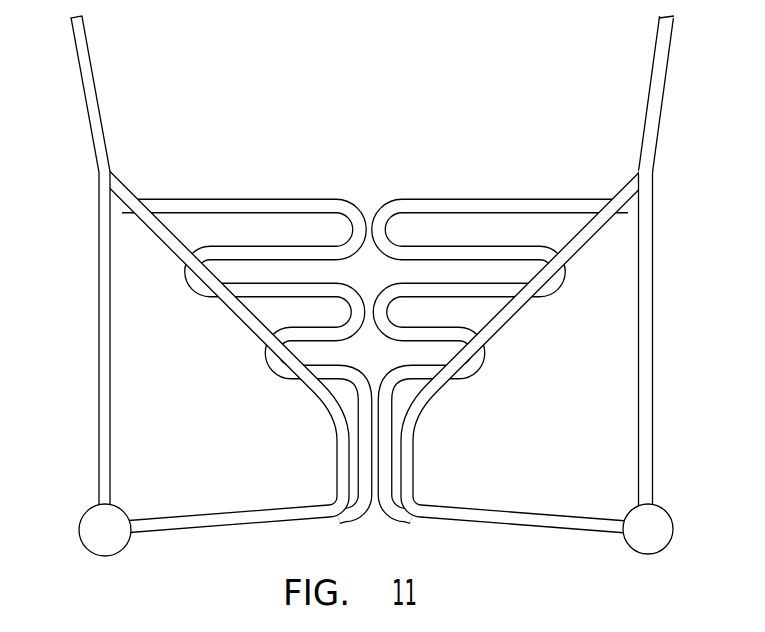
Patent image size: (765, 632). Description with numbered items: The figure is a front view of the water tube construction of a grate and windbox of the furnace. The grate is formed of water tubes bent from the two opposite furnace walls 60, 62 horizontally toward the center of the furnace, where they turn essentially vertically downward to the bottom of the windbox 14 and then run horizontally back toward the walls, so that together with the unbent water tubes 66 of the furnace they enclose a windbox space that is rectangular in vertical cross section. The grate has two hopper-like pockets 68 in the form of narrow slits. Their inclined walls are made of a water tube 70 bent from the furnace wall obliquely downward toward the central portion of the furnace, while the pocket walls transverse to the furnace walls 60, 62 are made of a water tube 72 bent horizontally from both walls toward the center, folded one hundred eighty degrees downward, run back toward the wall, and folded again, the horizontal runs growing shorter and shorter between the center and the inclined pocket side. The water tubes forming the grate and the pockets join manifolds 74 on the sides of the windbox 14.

The windbox 14 is at (364, 310).
The furnace wall 60 is at (657, 90).
The furnace wall 62 is at (90, 82).
The unbent water tubes 66 is at (643, 385).
The hopper-like pockets 68 is at (375, 274).
The water tube 70 is at (578, 242).
The water tube 72 is at (336, 209).
The manifolds 74 is at (645, 533).